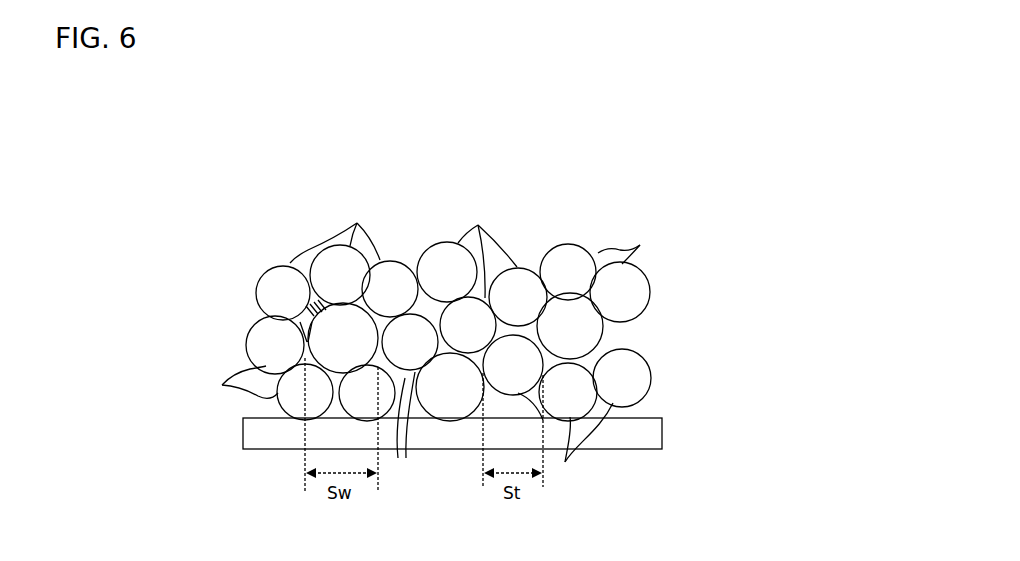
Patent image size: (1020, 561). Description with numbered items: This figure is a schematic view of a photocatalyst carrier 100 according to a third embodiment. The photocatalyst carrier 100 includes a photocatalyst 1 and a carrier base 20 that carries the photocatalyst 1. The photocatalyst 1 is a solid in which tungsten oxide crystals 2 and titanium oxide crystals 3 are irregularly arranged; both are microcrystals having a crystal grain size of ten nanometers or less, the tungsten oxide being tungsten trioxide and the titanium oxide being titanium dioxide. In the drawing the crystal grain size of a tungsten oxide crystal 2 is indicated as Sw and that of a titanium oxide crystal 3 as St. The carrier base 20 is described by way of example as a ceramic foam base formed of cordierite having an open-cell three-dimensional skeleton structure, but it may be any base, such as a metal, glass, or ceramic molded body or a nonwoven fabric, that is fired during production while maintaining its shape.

The photocatalyst carrier 100 is at (618, 209).
The photocatalyst 1 is at (678, 298).
The tungsten oxide crystals 2 is at (312, 345).
The titanium oxide crystals 3 is at (357, 223).
The carrier base 20 is at (663, 438).